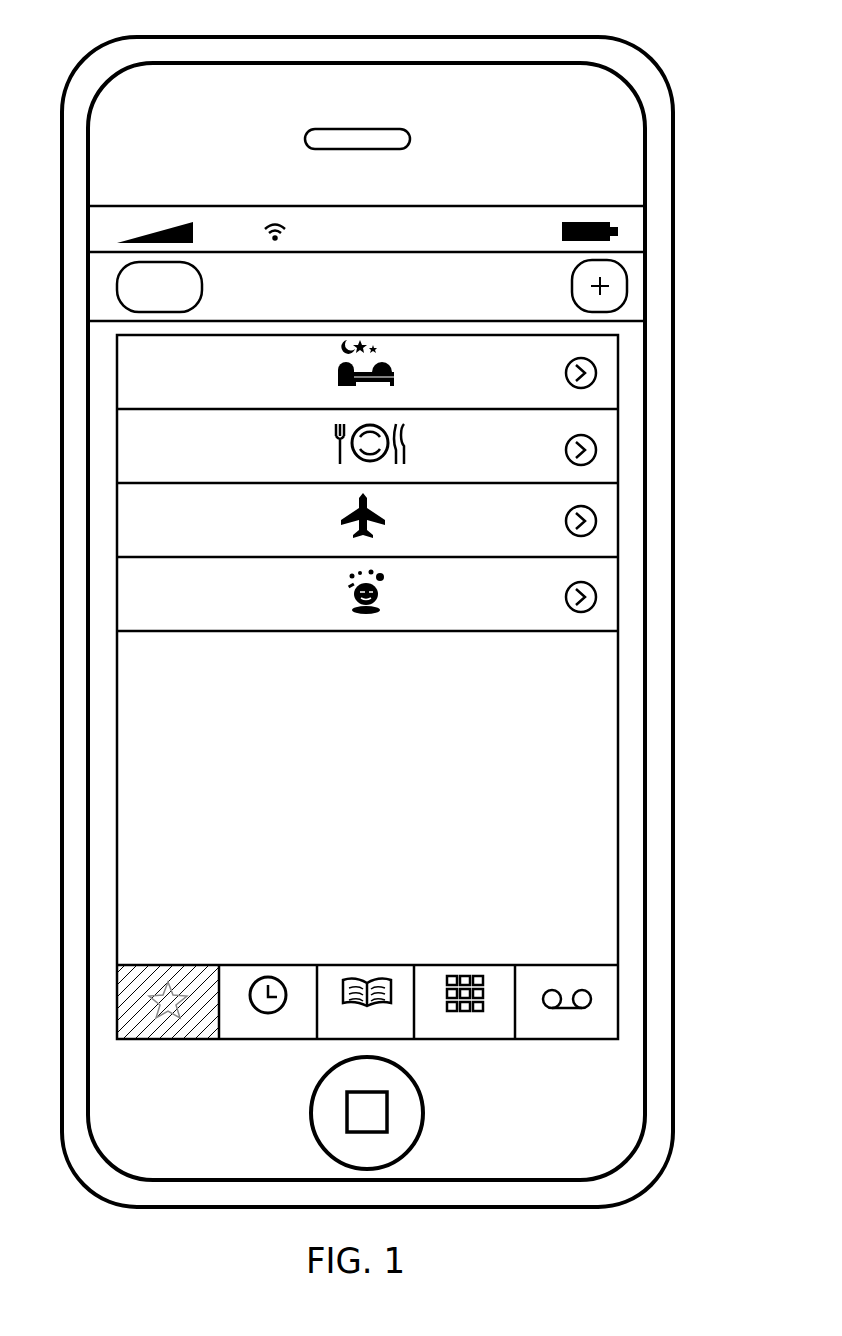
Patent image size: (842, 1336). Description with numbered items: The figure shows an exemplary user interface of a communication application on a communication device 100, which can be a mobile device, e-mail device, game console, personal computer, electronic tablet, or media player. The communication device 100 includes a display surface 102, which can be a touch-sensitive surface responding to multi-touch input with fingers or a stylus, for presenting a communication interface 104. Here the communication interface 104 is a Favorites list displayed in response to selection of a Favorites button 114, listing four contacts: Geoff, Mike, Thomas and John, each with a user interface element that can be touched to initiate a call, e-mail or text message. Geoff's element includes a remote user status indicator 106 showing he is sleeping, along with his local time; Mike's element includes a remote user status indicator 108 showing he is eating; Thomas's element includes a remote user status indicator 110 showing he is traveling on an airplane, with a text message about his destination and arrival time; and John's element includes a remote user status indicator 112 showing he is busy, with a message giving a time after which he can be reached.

The communication device 100 is at (632, 47).
The display surface 102 is at (635, 798).
The communication interface 104 is at (618, 382).
The remote user status indicator 106 is at (309, 381).
The remote user status indicator 108 is at (309, 465).
The remote user status indicator 110 is at (323, 517).
The remote user status indicator 112 is at (323, 603).
The Favorites button 114 is at (168, 975).